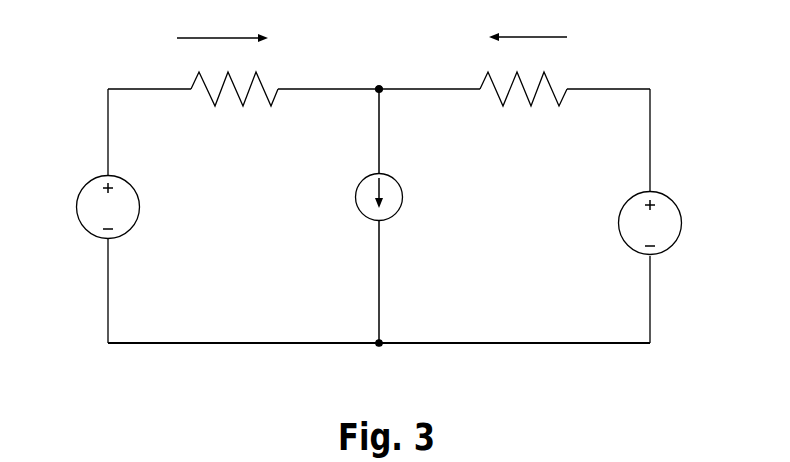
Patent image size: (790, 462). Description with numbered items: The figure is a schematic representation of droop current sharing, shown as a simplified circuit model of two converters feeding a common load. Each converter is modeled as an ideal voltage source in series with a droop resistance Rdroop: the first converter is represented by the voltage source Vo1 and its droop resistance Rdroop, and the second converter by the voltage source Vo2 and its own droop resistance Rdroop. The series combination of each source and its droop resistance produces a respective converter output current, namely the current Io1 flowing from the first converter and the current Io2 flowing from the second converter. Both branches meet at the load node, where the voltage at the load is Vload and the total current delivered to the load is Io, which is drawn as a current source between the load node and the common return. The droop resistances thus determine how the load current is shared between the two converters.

The droop resistance Rdroop is at (379, 99).
The voltage source of first converter Vo1 is at (88, 207).
The voltage source of second converter Vo2 is at (631, 223).
The load current Io is at (406, 197).
The output current of first converter Io1 is at (204, 36).
The output current of second converter Io2 is at (548, 36).
The load voltage Vload is at (378, 62).